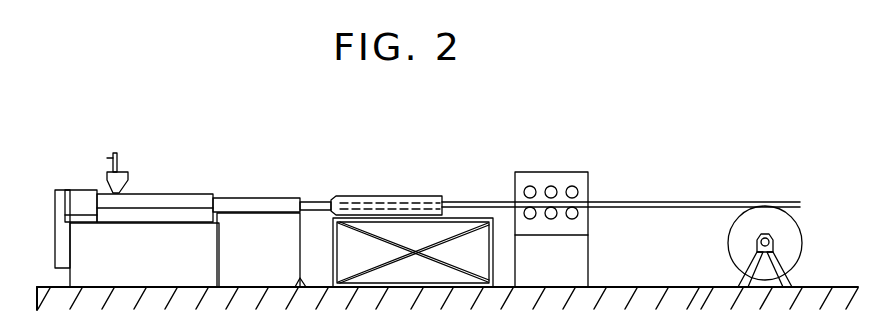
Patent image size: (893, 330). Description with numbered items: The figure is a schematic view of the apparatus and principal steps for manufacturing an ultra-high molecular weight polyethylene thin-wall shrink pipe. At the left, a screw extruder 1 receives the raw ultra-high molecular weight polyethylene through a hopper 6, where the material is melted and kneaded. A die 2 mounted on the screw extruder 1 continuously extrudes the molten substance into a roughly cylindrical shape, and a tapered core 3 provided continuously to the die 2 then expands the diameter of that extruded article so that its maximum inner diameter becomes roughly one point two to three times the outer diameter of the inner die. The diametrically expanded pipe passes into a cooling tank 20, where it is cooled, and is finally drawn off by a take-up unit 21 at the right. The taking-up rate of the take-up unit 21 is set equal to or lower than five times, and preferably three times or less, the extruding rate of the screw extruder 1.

The screw extruder 1 is at (178, 198).
The die 2 is at (265, 198).
The tapered core 3 is at (321, 202).
The hopper 6 is at (126, 180).
The cooling tank 20 is at (417, 196).
The take-up unit 21 is at (562, 182).